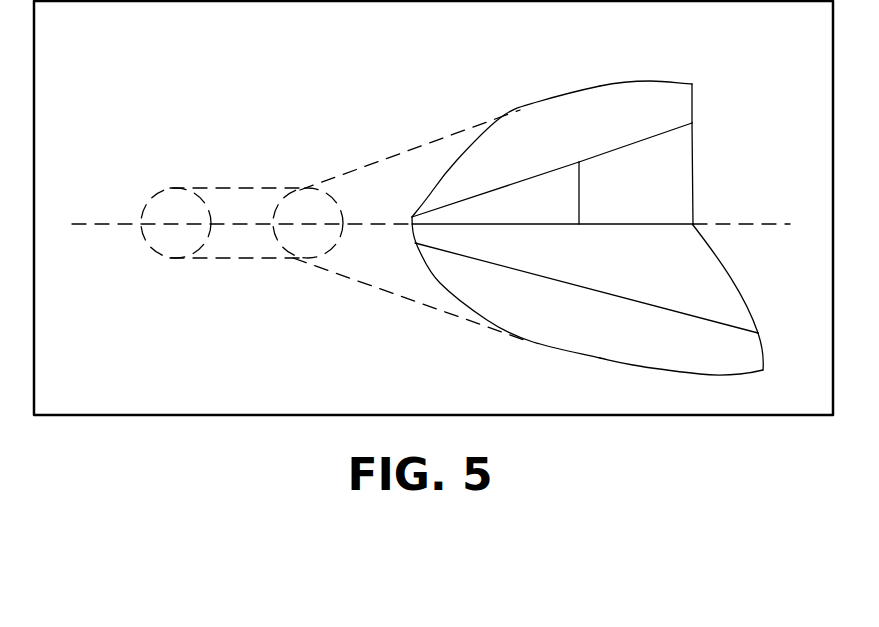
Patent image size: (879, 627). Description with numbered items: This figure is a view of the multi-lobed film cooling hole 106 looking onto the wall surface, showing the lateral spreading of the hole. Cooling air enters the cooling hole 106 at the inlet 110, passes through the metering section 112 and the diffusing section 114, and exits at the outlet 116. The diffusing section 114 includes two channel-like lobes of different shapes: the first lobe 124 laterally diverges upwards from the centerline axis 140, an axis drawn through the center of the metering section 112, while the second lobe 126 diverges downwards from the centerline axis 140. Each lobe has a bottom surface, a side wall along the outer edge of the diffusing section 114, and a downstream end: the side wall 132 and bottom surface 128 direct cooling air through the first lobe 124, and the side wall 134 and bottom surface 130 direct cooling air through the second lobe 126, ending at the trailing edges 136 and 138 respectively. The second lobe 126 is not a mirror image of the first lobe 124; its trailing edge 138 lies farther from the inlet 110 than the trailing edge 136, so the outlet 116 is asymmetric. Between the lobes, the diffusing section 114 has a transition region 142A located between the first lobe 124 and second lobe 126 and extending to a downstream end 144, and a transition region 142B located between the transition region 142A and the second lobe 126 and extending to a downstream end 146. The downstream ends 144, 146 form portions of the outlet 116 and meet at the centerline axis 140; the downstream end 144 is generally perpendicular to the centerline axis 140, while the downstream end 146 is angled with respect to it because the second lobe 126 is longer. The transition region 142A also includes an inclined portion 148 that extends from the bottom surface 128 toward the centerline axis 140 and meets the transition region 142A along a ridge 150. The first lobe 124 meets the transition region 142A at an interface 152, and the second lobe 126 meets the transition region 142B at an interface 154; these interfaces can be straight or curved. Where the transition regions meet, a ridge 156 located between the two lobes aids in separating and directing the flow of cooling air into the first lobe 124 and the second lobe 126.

The cooling hole 106 is at (421, 163).
The inlet 110 is at (167, 243).
The metering section 112 is at (253, 240).
The diffusing section 114 is at (480, 292).
The outlet 116 is at (665, 74).
The first lobe 124 is at (529, 125).
The second lobe 126 is at (573, 335).
The bottom surface 128 is at (567, 138).
The bottom surface 130 is at (625, 348).
The side wall 132 is at (566, 94).
The side wall 134 is at (603, 358).
The trailing edge 136 is at (695, 100).
The trailing edge 138 is at (763, 352).
The centerline axis 140 is at (757, 228).
The transition region 142A is at (650, 198).
The transition region 142B is at (632, 268).
The downstream end 144 is at (696, 173).
The downstream end 146 is at (733, 278).
The inclined portion 148 is at (505, 216).
The ridge 150 is at (577, 220).
The interface 152 is at (632, 144).
The interface 154 is at (688, 317).
The ridge 156 is at (497, 227).